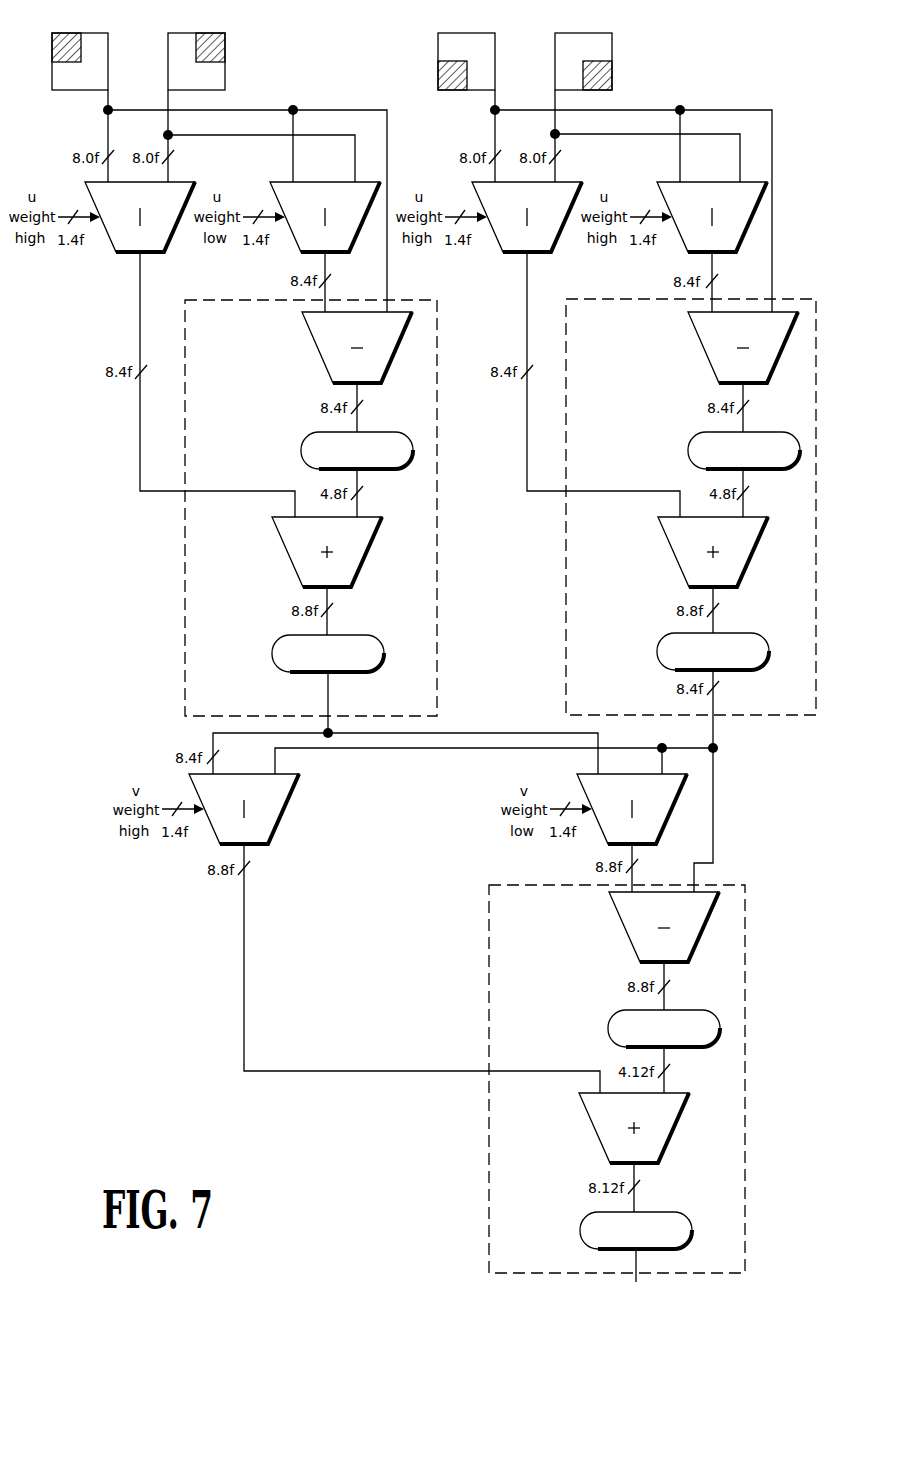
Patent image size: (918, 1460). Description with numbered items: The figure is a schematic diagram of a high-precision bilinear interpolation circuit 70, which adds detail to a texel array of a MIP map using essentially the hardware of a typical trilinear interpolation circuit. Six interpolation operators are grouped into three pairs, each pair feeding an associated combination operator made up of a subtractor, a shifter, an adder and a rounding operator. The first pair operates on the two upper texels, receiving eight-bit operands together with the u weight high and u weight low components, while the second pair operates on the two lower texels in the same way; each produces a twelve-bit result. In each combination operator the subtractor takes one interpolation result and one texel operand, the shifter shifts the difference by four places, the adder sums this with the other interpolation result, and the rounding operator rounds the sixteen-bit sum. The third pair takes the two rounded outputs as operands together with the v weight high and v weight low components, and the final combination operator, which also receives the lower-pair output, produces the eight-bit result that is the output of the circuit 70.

The high-precision bilinear interpolation circuit 70 is at (144, 1042).